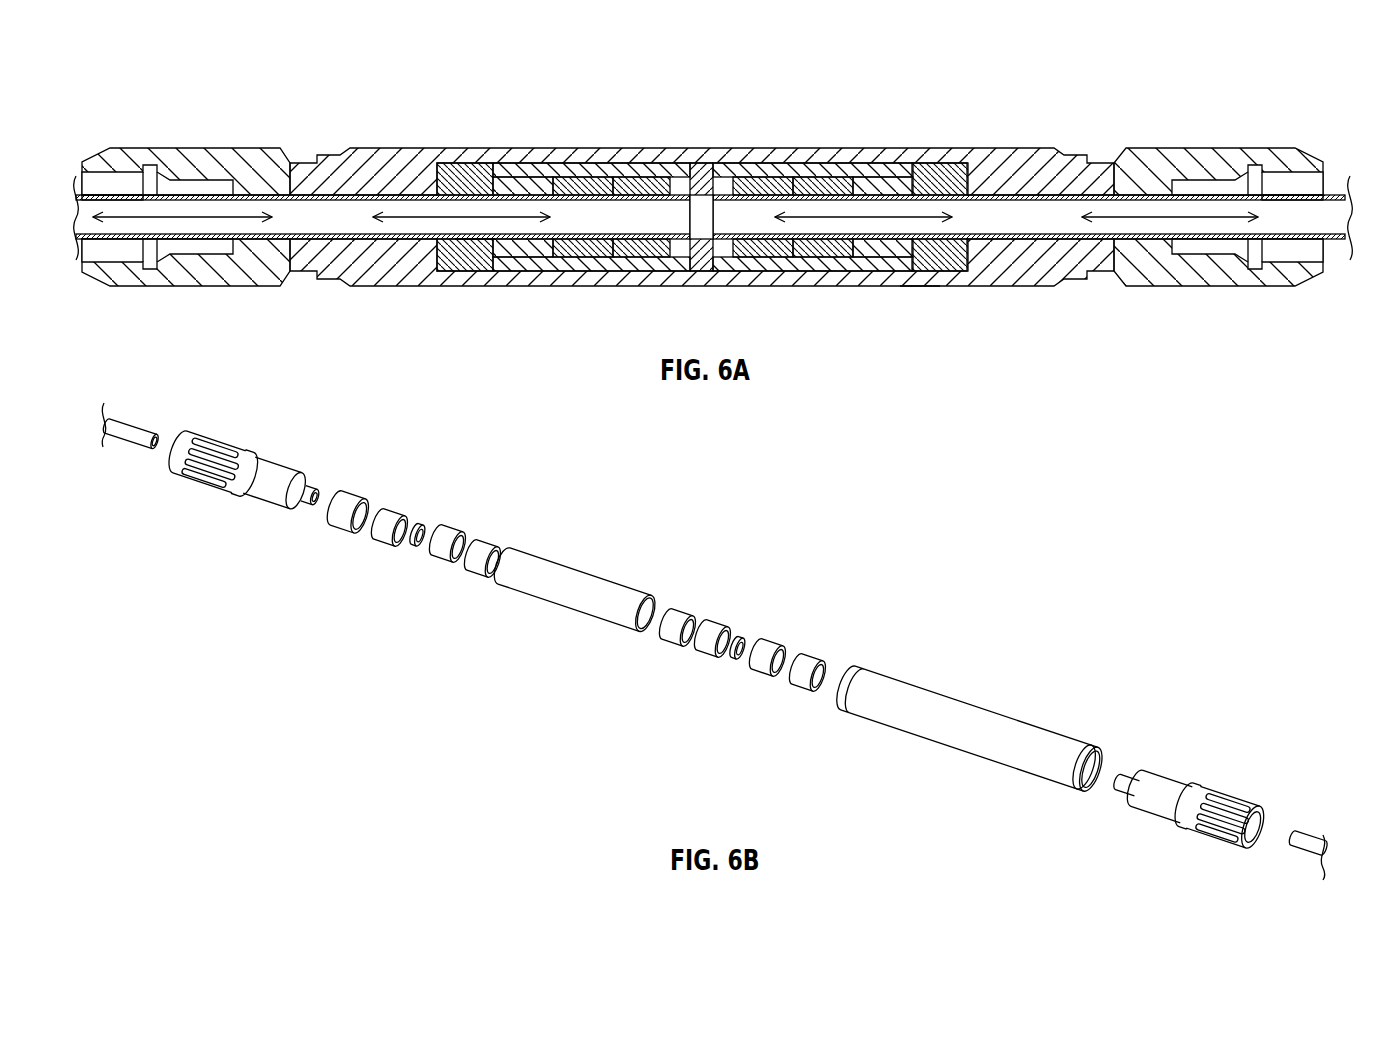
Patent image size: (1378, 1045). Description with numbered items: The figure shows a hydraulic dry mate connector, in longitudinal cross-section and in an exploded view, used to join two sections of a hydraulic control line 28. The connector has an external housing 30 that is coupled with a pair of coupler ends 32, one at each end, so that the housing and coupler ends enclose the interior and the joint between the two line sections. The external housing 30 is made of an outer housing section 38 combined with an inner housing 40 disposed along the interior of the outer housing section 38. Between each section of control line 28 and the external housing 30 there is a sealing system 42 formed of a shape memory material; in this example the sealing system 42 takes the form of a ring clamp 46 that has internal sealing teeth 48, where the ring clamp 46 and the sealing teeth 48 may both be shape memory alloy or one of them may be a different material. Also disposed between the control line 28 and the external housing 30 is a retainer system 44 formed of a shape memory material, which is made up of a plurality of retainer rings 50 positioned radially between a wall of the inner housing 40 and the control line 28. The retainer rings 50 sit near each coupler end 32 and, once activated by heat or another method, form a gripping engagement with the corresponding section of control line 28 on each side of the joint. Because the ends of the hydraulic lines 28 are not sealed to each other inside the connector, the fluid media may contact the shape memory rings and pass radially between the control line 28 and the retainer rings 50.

In FIG. 6A, the control line 28 is at (112, 196).
In FIG. 6B, the control line 28 is at (122, 432).
In FIG. 6A, the external housing 30 is at (924, 298).
In FIG. 6A, the coupler end 32 is at (240, 140).
In FIG. 6B, the coupler end 32 is at (1199, 744).
In FIG. 6A, the outer housing section 38 is at (868, 286).
In FIG. 6B, the outer housing section 38 is at (957, 676).
In FIG. 6A, the inner housing 40 is at (640, 258).
In FIG. 6B, the inner housing 40 is at (587, 538).
In FIG. 6A, the sealing system 42 is at (460, 165).
In FIG. 6A, the retainer system 44 is at (823, 178).
In FIG. 6A, the ring clamp 46 is at (463, 257).
In FIG. 6B, the ring clamp 46 is at (333, 540).
In FIG. 6A, the internal sealing teeth 48 is at (470, 241).
In FIG. 6A, the retainer ring 50 is at (820, 260).
In FIG. 6B, the retainer ring 50 is at (474, 583).